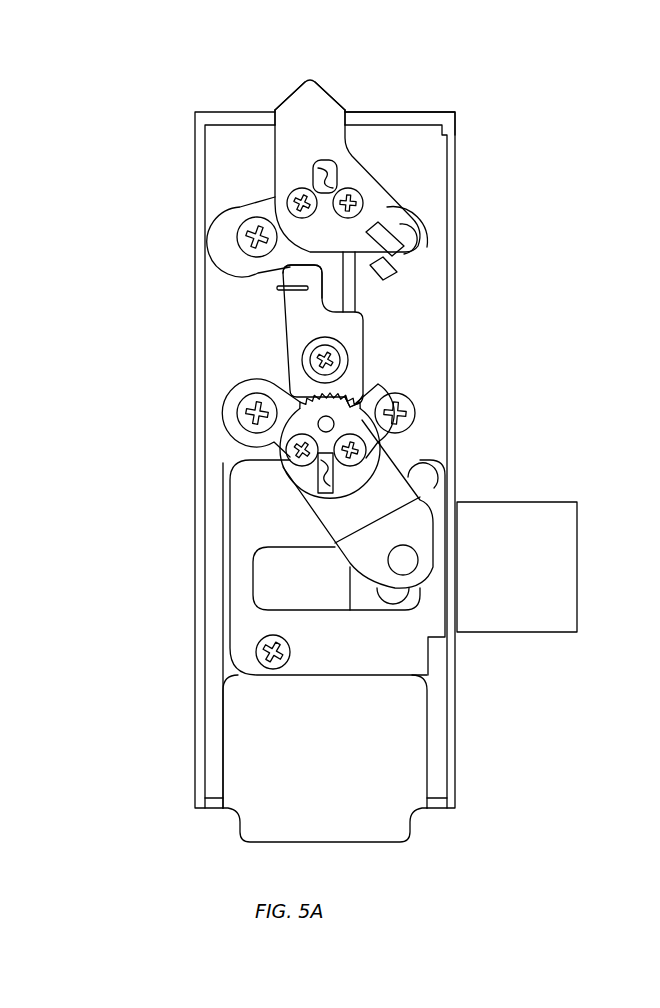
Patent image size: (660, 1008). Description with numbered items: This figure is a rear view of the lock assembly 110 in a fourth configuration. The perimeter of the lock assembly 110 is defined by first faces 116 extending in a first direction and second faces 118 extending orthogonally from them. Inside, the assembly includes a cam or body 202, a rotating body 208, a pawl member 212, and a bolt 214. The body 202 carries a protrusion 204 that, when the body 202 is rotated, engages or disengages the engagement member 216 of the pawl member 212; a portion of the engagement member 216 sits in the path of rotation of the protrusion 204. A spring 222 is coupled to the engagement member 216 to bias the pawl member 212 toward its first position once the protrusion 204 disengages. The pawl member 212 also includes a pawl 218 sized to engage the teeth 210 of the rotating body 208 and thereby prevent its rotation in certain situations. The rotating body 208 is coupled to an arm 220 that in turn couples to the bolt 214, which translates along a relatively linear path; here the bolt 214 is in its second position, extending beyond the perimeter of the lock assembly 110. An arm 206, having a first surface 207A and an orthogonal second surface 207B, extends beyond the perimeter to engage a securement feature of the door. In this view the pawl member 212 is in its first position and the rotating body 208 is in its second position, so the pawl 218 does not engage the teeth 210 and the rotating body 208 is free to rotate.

The lock assembly 110 is at (128, 118).
The first faces 116 is at (458, 190).
The second faces 118 is at (407, 113).
The body 202 is at (353, 168).
The protrusion 204 is at (388, 268).
The arm 206 is at (303, 93).
The first surface 207A is at (292, 93).
The second surface 207B is at (335, 92).
The rotating body 208 is at (305, 480).
The teeth 210 is at (295, 405).
The pawl member 212 is at (358, 324).
The bolt 214 is at (537, 625).
The engagement member 216 is at (303, 272).
The pawl 218 is at (360, 404).
The arm 220 is at (415, 522).
The spring 222 is at (298, 292).